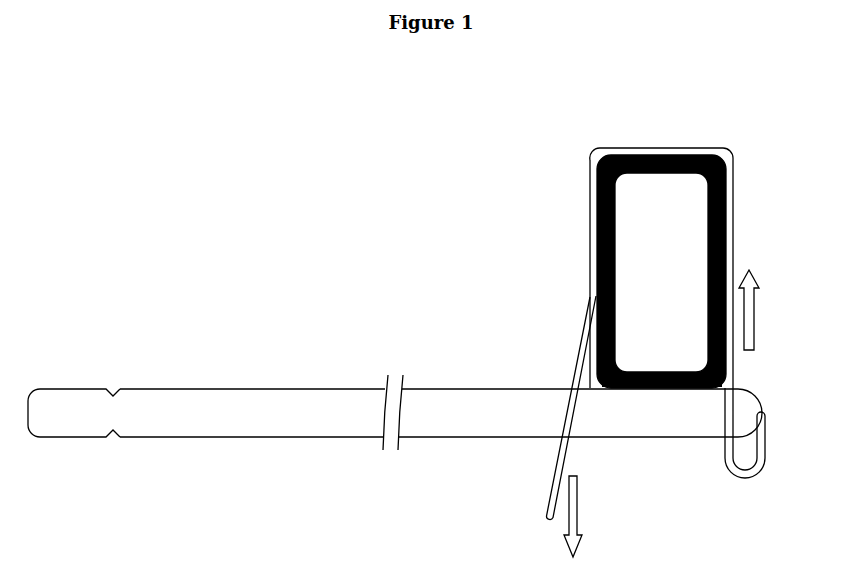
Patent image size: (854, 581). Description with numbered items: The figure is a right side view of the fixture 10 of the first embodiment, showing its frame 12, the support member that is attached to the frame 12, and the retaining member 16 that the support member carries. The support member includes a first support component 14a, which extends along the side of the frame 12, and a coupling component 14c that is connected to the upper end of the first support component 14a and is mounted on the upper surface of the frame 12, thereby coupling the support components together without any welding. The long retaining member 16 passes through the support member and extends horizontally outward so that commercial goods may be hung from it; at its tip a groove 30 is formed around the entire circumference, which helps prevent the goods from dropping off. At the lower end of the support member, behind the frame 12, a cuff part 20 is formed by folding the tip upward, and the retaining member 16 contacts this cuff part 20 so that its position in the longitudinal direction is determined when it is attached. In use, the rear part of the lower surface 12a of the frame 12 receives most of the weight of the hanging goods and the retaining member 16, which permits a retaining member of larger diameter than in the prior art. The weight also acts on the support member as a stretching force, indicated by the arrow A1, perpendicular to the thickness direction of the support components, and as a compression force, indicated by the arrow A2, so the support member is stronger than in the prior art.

The fixture 10 is at (458, 117).
The frame 12 is at (598, 153).
The lower surface of the frame 12a is at (693, 390).
The first support component 14a is at (590, 226).
The coupling component 14c is at (660, 148).
The retaining member 16 is at (438, 390).
The cuff part 20 is at (766, 430).
The groove 30 is at (113, 394).
The arrow A1 is at (578, 508).
The arrow A2 is at (756, 301).